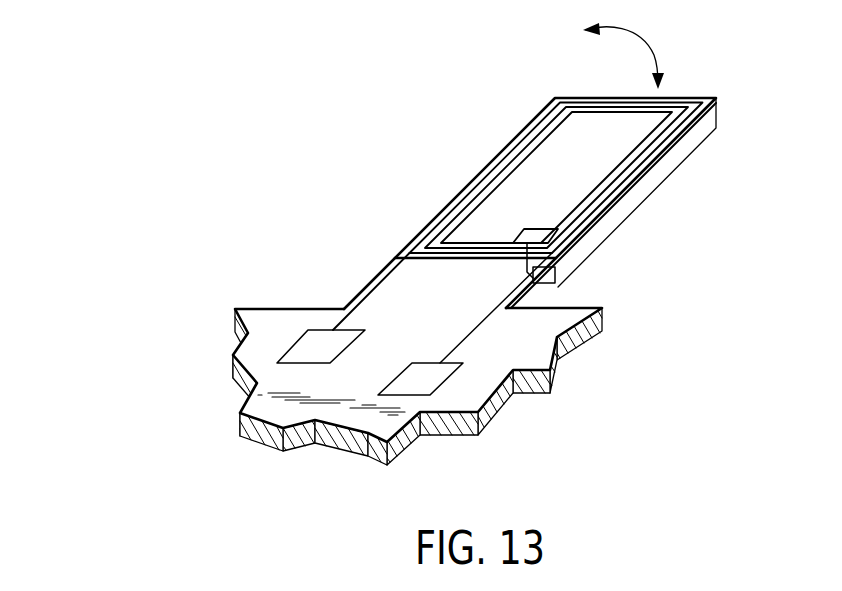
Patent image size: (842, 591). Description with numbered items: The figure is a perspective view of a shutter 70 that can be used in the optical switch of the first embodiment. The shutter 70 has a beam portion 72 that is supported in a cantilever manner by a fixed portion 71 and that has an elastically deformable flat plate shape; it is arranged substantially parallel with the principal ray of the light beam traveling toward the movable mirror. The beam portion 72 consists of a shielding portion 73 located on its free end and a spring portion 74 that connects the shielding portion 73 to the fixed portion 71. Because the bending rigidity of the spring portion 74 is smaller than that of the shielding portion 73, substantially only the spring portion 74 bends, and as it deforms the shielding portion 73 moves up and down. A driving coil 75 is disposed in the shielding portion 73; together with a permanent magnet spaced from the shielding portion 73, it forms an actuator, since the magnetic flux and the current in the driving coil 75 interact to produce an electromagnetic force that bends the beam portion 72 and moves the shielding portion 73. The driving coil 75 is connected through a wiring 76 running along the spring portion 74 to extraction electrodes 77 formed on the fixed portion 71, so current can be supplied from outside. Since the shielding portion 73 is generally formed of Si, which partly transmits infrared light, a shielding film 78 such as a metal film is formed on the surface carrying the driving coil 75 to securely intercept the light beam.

The shutter 70 is at (346, 122).
The fixed portion 71 is at (535, 350).
The beam portion 72 is at (757, 210).
The shielding portion 73 is at (660, 180).
The spring portion 74 is at (558, 282).
The driving coil 75 is at (670, 124).
The wiring 76 is at (388, 264).
The extraction electrodes 77 is at (317, 347).
The shielding film 78 is at (518, 137).